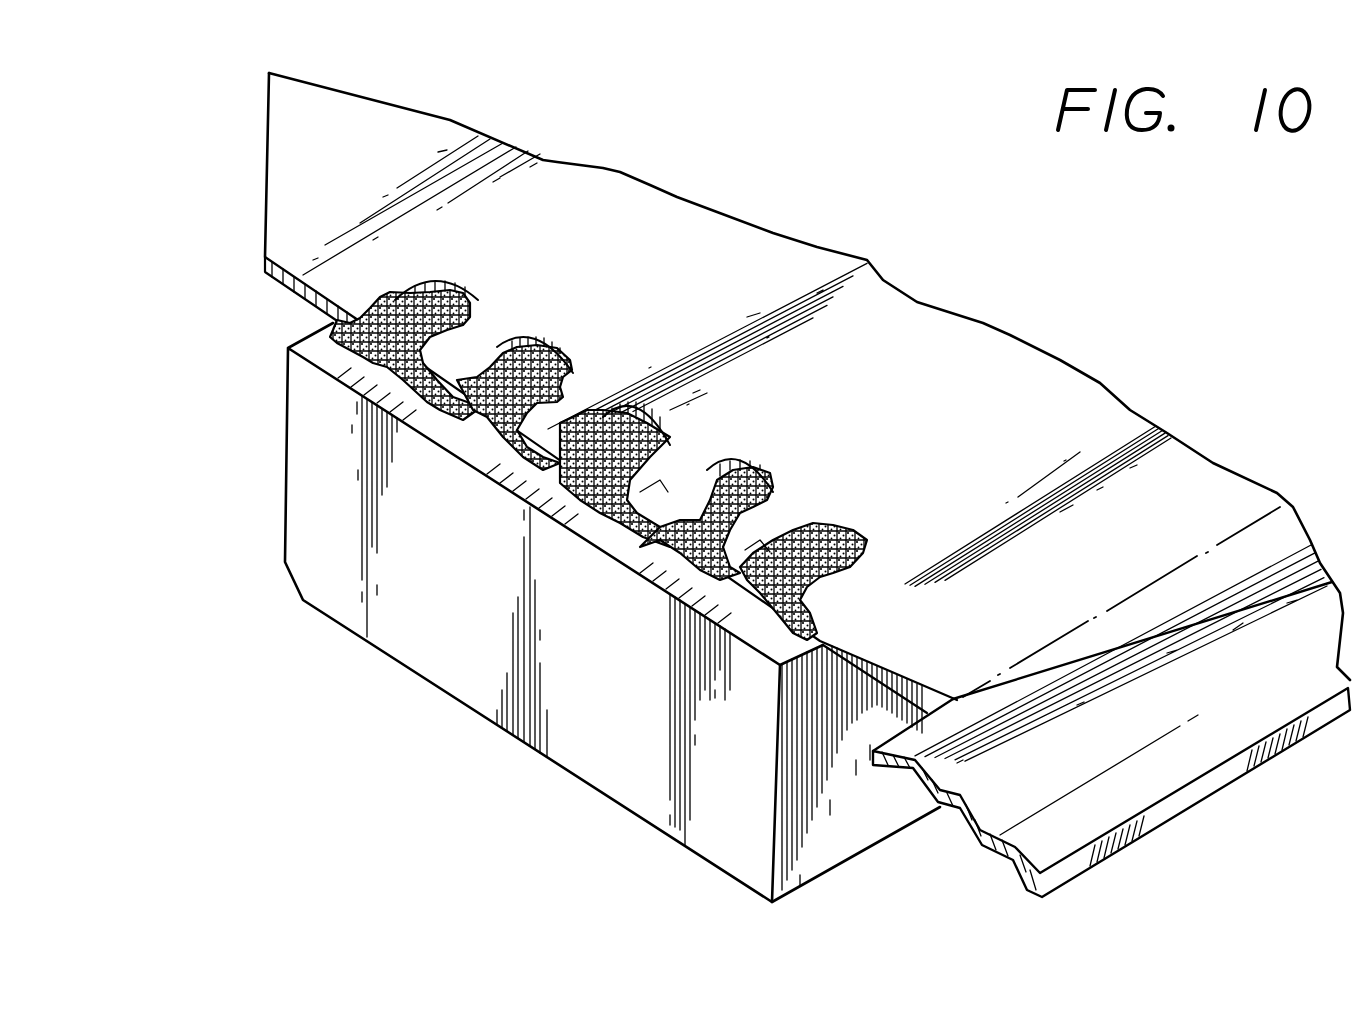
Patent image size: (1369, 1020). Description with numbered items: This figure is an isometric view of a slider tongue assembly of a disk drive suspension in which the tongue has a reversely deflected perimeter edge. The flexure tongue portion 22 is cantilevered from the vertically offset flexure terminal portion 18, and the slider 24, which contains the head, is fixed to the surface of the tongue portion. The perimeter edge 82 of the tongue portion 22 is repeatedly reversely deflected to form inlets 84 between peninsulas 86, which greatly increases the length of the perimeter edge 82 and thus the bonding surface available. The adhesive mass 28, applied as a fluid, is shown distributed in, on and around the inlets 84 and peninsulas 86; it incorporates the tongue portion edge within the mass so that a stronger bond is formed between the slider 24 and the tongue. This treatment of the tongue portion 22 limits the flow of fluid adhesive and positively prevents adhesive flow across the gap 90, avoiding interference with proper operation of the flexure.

The flexure terminal portion 18 is at (1137, 797).
The flexure tongue portion 22 is at (650, 218).
The slider 24 is at (680, 777).
The adhesive mass 28 is at (563, 377).
The perimeter edge 82 is at (300, 307).
The inlets 84 is at (767, 490).
The peninsulas 86 is at (755, 543).
The gap 90 is at (433, 421).